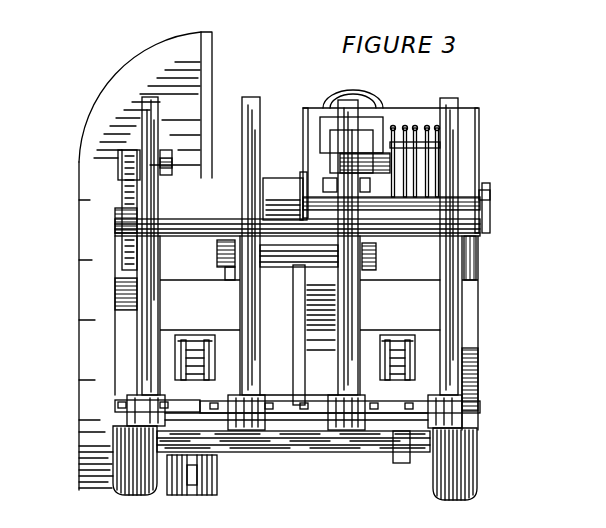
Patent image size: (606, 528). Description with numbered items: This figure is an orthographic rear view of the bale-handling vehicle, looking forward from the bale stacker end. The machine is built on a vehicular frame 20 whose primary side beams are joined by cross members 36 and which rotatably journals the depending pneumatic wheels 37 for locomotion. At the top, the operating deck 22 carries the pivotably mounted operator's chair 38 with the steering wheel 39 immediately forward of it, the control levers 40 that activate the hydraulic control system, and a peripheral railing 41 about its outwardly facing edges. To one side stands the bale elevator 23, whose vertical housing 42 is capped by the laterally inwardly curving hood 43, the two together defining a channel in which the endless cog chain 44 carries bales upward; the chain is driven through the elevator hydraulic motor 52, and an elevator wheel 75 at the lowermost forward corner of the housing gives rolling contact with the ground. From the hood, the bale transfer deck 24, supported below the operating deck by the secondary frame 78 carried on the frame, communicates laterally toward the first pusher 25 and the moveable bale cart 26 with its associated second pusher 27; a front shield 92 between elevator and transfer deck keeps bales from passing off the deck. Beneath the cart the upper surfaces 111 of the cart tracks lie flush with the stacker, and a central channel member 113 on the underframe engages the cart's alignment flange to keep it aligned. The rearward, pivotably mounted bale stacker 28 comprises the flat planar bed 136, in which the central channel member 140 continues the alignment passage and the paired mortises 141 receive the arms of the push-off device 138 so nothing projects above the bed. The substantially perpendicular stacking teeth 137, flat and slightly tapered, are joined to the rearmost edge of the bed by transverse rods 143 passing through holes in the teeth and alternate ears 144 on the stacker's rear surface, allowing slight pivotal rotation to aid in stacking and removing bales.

The vehicular frame 20 is at (318, 435).
The operating deck 22 is at (410, 200).
The bale elevator 23 is at (116, 130).
The bale transfer deck 24 is at (228, 217).
The first pusher 25 is at (414, 205).
The moveable bale cart 26 is at (222, 256).
The second pusher 27 is at (491, 201).
The bale stacker 28 is at (128, 306).
The cross members 36 is at (215, 427).
The pneumatic wheels 37 is at (152, 105).
The operator's chair 38 is at (330, 127).
The steering wheel 39 is at (358, 94).
The control levers 40 is at (432, 126).
The peripheral railing 41 is at (468, 111).
The vertical housing 42 is at (100, 372).
The laterally inwardly curving hood 43 is at (197, 56).
The endless cog chain 44 is at (121, 180).
The elevator hydraulic motor 52 is at (164, 165).
The elevator wheel 75 is at (185, 496).
The secondary frame 78 is at (475, 262).
The front shield 92 is at (282, 182).
The upper surfaces of tracks 111 is at (225, 272).
The central channel member 113 is at (295, 270).
The bed 136 is at (468, 305).
The stacking teeth 137 is at (250, 105).
The push-off device 138 is at (398, 345).
The central channel member 140 is at (298, 343).
The paired mortises 141 is at (202, 340).
The transverse rods 143 is at (288, 406).
The ears 144 is at (163, 405).